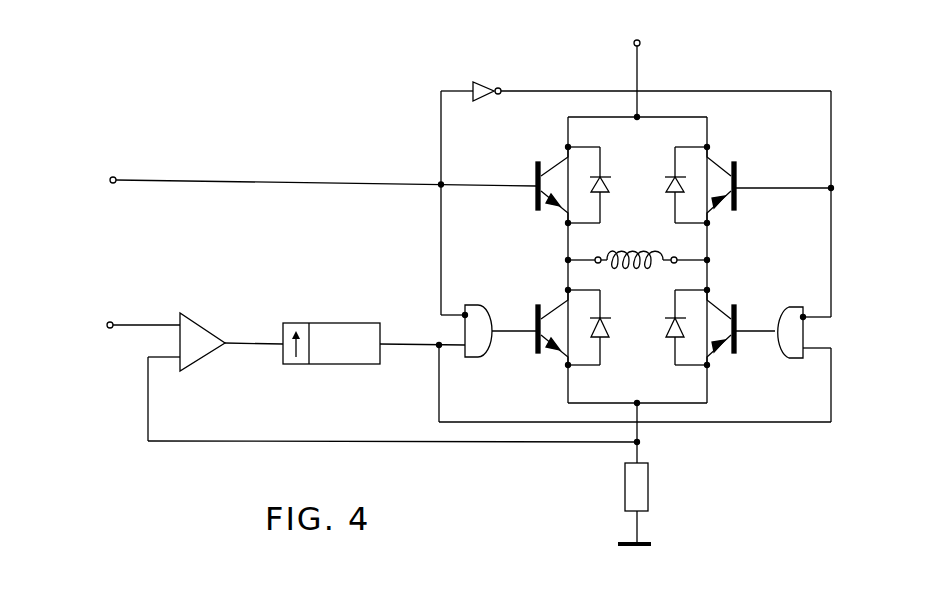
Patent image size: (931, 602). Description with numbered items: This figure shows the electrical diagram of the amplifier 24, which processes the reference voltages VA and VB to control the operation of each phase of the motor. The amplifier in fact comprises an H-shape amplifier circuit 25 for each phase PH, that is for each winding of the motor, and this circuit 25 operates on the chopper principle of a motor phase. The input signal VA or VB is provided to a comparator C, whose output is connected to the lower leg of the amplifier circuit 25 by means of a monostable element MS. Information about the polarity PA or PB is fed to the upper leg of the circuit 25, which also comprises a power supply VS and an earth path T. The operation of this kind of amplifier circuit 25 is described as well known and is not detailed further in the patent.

The amplifier 24 is at (278, 131).
The H-shape amplifier circuit 25 is at (832, 127).
The comparator C is at (202, 356).
The monostable element MS is at (332, 358).
The phase PH is at (637, 247).
The earth path T is at (643, 542).